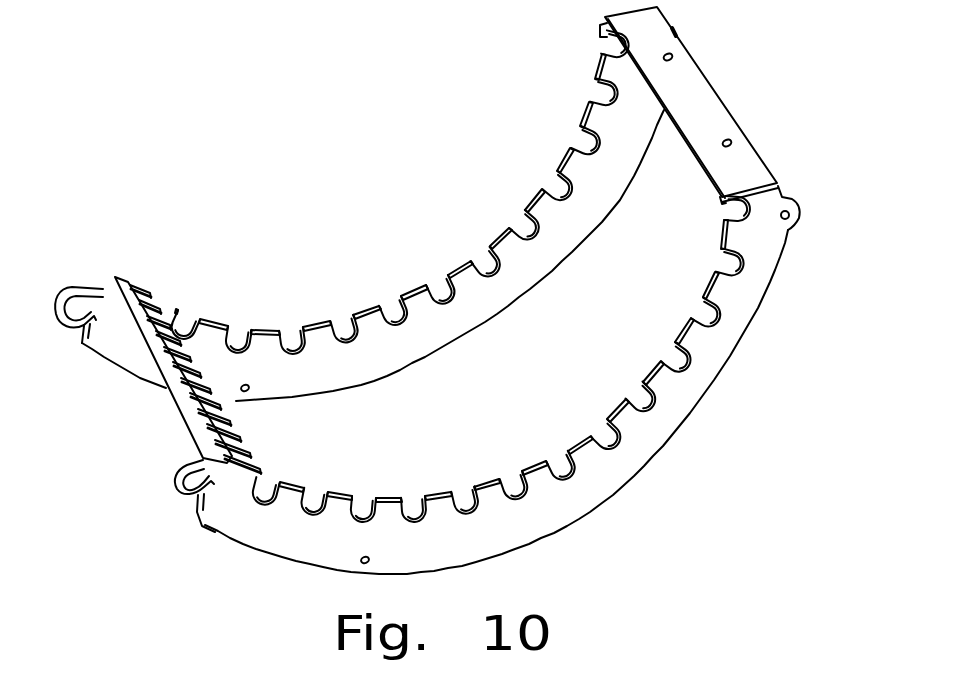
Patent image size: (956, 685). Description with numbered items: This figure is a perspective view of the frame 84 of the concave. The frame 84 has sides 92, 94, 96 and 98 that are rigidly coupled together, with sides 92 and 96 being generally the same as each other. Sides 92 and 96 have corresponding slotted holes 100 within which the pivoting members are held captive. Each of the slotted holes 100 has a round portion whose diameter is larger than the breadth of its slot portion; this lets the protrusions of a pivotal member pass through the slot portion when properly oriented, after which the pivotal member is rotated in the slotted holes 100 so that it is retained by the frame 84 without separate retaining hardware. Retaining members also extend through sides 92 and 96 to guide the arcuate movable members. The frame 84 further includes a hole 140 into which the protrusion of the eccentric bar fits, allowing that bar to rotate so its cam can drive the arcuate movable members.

The frame 84 is at (451, 291).
The side 92 is at (567, 523).
The side 94 is at (177, 424).
The side 96 is at (500, 317).
The side 98 is at (713, 88).
The slotted holes 100 is at (477, 253).
The hole 140 is at (788, 200).